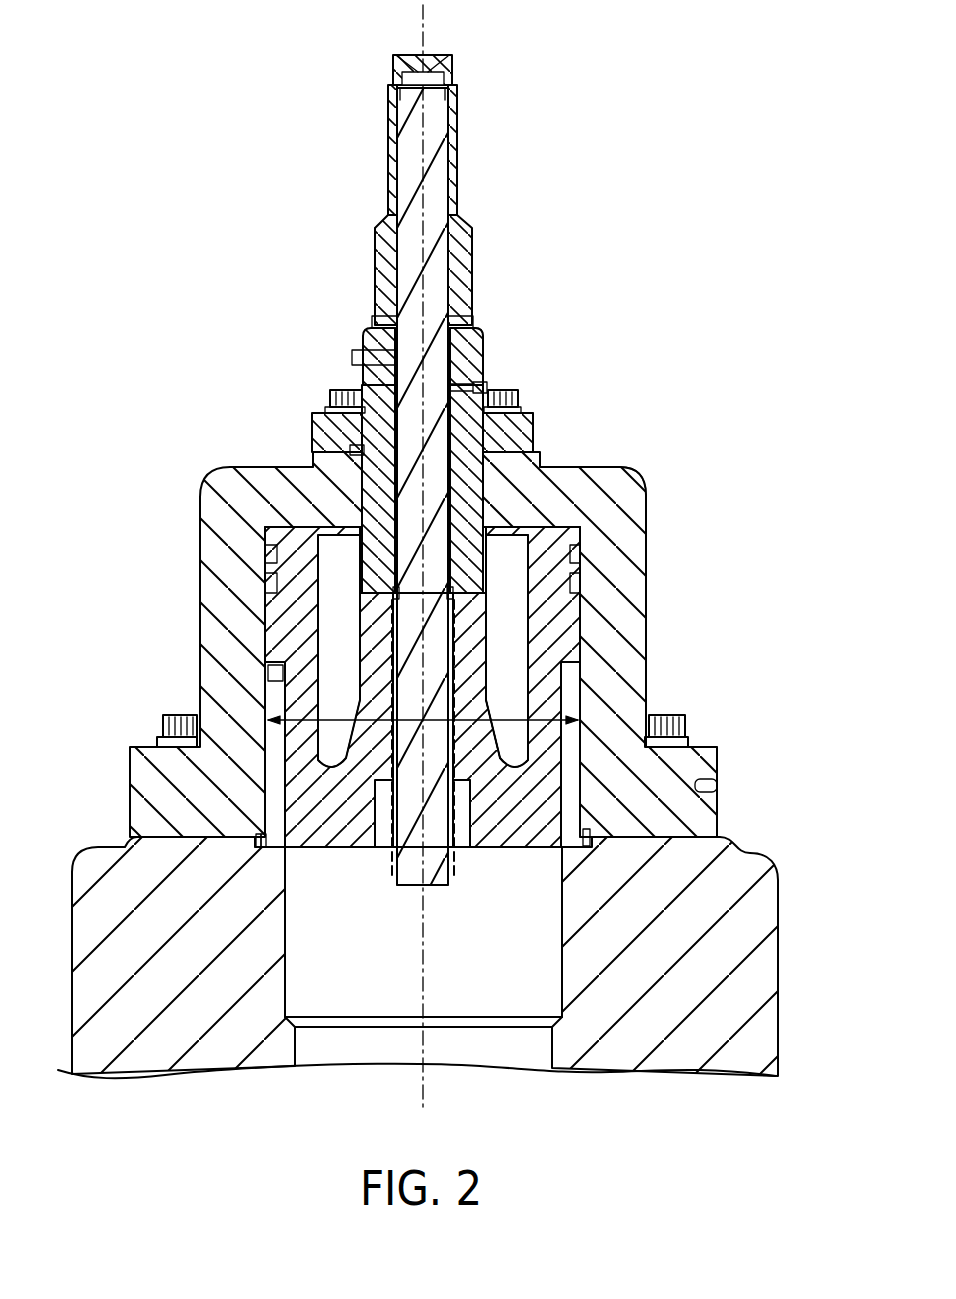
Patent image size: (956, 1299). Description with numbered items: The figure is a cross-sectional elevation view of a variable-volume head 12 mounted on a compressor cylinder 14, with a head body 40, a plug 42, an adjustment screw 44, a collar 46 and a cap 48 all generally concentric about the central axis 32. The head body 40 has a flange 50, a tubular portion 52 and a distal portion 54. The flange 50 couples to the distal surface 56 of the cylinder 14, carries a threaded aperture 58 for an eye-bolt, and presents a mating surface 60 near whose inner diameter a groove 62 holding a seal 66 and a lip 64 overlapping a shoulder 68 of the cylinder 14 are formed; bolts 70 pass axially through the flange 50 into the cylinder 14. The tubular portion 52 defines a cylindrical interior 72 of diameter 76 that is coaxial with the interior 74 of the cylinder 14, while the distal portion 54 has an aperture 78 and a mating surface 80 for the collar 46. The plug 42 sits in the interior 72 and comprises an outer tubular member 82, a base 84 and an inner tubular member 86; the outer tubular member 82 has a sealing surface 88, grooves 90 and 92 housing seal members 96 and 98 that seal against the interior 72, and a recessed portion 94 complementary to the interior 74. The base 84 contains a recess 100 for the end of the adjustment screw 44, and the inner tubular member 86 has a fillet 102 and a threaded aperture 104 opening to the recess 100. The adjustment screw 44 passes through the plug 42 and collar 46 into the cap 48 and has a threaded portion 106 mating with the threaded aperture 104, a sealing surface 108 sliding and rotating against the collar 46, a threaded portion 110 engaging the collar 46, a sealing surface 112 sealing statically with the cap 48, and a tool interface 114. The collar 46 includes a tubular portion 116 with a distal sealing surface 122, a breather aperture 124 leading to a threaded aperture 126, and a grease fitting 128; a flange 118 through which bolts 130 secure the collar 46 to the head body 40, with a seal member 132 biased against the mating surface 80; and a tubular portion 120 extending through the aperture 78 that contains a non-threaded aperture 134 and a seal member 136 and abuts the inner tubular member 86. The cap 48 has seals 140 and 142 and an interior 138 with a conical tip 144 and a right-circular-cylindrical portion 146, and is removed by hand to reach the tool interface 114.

The variable-volume head 12 is at (760, 117).
The cylinder 14 is at (762, 847).
The central axis 32 is at (420, 1002).
The head body 40 is at (659, 519).
The plug 42 is at (516, 858).
The adjustment screw 44 is at (439, 893).
The collar 46 is at (449, 419).
The cap 48 is at (423, 201).
The flange 50 is at (690, 747).
The tubular portion 52 is at (650, 652).
The distal portion 54 is at (625, 466).
The distal surface 56 is at (700, 838).
The threaded aperture 58 is at (712, 781).
The mating surface 60 is at (150, 847).
The groove 62 is at (255, 836).
The lip 64 is at (285, 890).
The seal 66 is at (256, 838).
The shoulder 68 is at (258, 846).
The bolts 70 is at (177, 714).
The interior 72 is at (585, 698).
The interior 74 is at (527, 984).
The diameter 76 is at (347, 740).
The aperture 78 is at (312, 462).
The mating surface 80 is at (343, 446).
The outer tubular member 82 is at (552, 653).
The base 84 is at (336, 848).
The inner tubular member 86 is at (487, 652).
The sealing surface 88 is at (583, 612).
The groove 90 is at (572, 552).
The groove 92 is at (572, 583).
The recessed portion 94 is at (583, 781).
The seal member 96 is at (581, 555).
The seal member 98 is at (581, 584).
The recess 100 is at (457, 850).
The fillet 102 is at (505, 762).
The threaded aperture 104 is at (290, 656).
The threaded portion 106 is at (396, 884).
The sealing surface 108 is at (470, 500).
The threaded portion 110 is at (484, 350).
The sealing surface 112 is at (471, 265).
The tool interface 114 is at (459, 92).
The tubular portion 116 is at (490, 332).
The flange 118 is at (532, 418).
The tubular portion 120 is at (375, 482).
The distal sealing surface 122 is at (471, 322).
The breather aperture 124 is at (355, 350).
The threaded aperture 126 is at (352, 360).
The grease fitting 128 is at (488, 388).
The bolts 130 is at (345, 398).
The seal member 132 is at (540, 458).
The non-threaded aperture 134 is at (380, 550).
The seal member 136 is at (398, 586).
The interior 138 is at (430, 43).
The seal 140 is at (376, 318).
The seal 142 is at (377, 262).
The conical tip 144 is at (400, 57).
The right-circular-cylindrical portion 146 is at (397, 89).